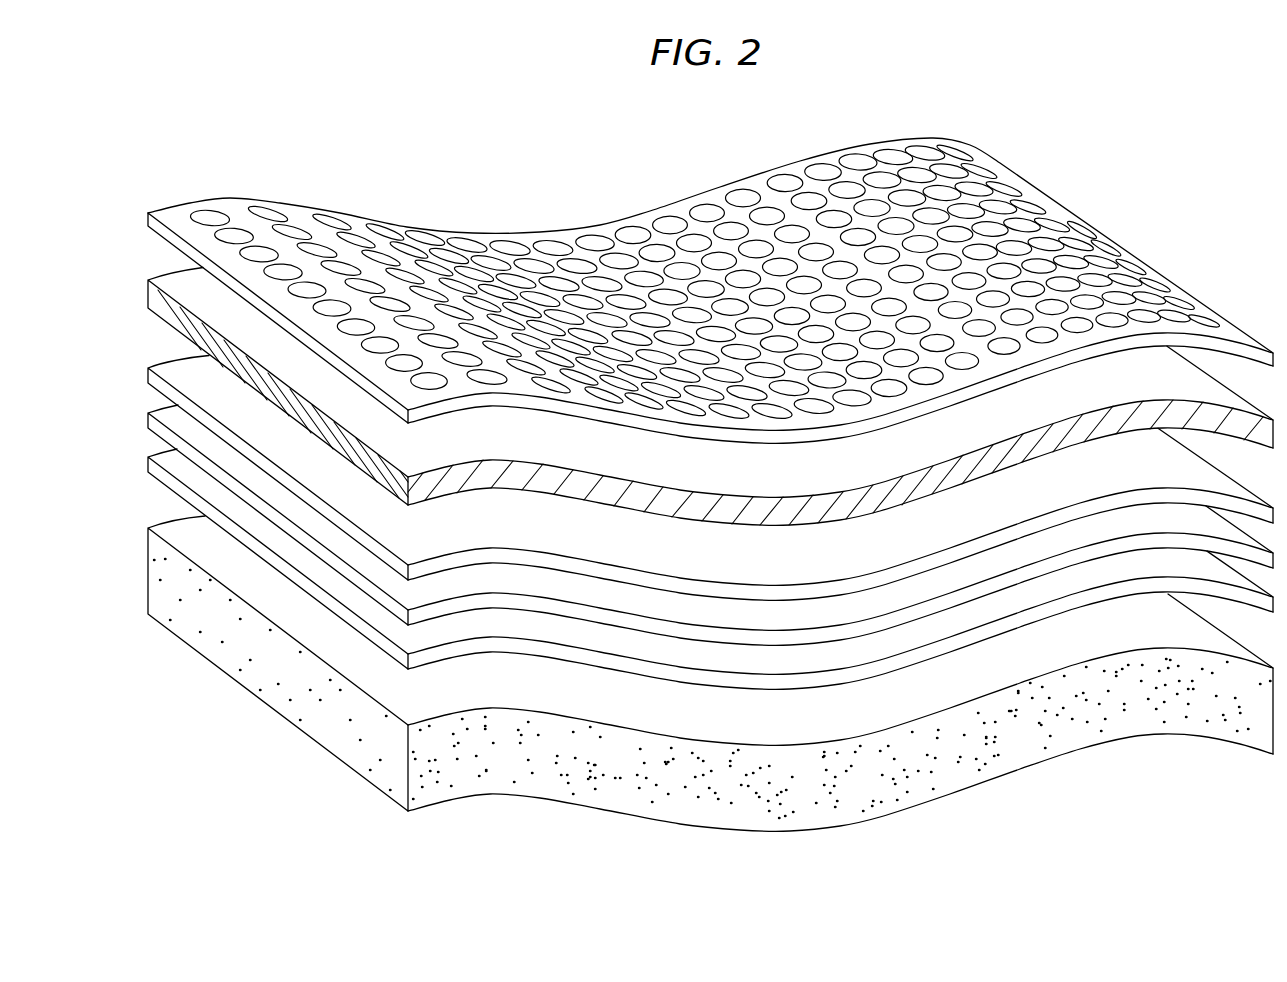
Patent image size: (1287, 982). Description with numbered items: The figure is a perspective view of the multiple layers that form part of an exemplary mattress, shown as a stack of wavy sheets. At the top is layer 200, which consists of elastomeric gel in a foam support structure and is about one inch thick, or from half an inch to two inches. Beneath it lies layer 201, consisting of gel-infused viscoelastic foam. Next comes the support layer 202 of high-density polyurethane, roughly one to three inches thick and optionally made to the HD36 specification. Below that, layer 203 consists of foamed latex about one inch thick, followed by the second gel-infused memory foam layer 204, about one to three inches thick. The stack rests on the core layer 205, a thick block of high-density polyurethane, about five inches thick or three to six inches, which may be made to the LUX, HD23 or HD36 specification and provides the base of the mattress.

The layer 200 is at (150, 218).
The layer 201 is at (150, 288).
The support layer 202 is at (150, 375).
The layer 203 is at (150, 419).
The second gel-infused memory foam layer 204 is at (150, 463).
The core layer 205 is at (152, 573).